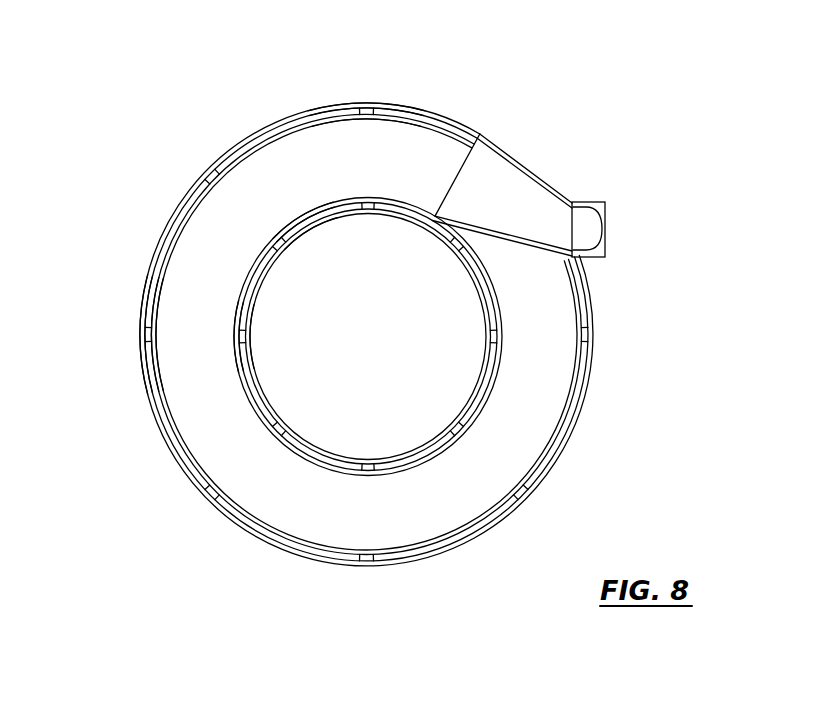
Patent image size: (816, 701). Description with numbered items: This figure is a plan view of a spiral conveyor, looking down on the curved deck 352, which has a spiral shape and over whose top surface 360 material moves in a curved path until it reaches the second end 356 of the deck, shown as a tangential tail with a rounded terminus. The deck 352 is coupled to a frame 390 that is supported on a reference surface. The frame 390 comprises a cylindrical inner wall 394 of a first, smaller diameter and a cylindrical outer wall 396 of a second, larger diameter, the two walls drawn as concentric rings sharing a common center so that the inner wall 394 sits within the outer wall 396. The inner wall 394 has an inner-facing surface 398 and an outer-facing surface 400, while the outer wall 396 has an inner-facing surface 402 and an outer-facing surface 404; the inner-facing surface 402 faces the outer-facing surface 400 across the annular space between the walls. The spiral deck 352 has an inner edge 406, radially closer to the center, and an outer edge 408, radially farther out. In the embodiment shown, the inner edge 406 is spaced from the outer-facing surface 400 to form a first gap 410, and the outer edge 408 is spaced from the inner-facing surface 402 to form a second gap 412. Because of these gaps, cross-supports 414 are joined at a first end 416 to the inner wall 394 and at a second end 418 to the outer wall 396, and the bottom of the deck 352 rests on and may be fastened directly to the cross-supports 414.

The curved deck 352 is at (428, 138).
The second end 356 is at (605, 230).
The top surface 360 is at (395, 205).
The frame 390 is at (163, 198).
The cylindrical inner wall 394 is at (320, 210).
The cylindrical outer wall 396 is at (353, 103).
The inner-facing surface 398 is at (316, 250).
The outer-facing surface 400 is at (297, 212).
The inner-facing surface 402 is at (357, 124).
The outer-facing surface 404 is at (346, 96).
The inner edge 406 is at (247, 303).
The outer edge 408 is at (170, 260).
The first gap 410 is at (230, 302).
The second gap 412 is at (147, 297).
The cross-supports 414 is at (145, 342).
The first end 416 is at (243, 340).
The second end 418 is at (142, 332).